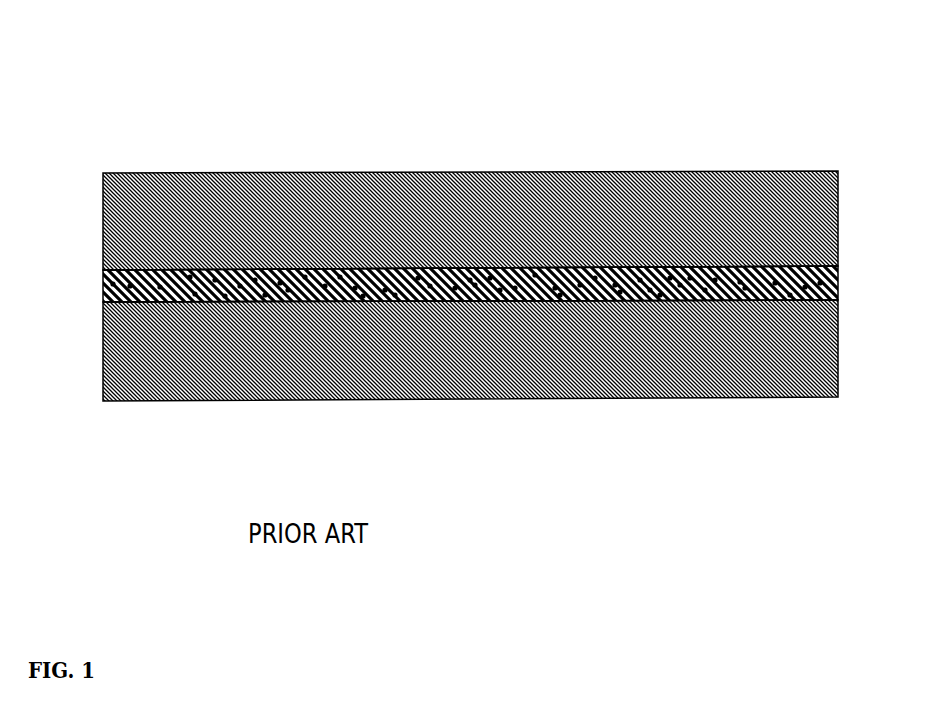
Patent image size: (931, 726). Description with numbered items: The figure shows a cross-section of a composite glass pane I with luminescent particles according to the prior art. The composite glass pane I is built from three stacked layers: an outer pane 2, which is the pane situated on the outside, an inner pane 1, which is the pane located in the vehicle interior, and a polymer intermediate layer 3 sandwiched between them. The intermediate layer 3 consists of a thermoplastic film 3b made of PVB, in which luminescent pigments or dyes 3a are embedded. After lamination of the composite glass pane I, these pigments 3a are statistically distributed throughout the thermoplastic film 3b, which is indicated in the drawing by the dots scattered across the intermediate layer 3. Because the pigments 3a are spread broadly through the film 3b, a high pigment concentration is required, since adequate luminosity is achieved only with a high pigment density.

The inner pane 1 is at (508, 413).
The outer pane 2 is at (325, 150).
The polymer intermediate layer 3 is at (466, 283).
The luminescent pigments or dyes 3a is at (104, 273).
The thermoplastic film 3b is at (99, 304).
The composite glass pane I is at (430, 140).